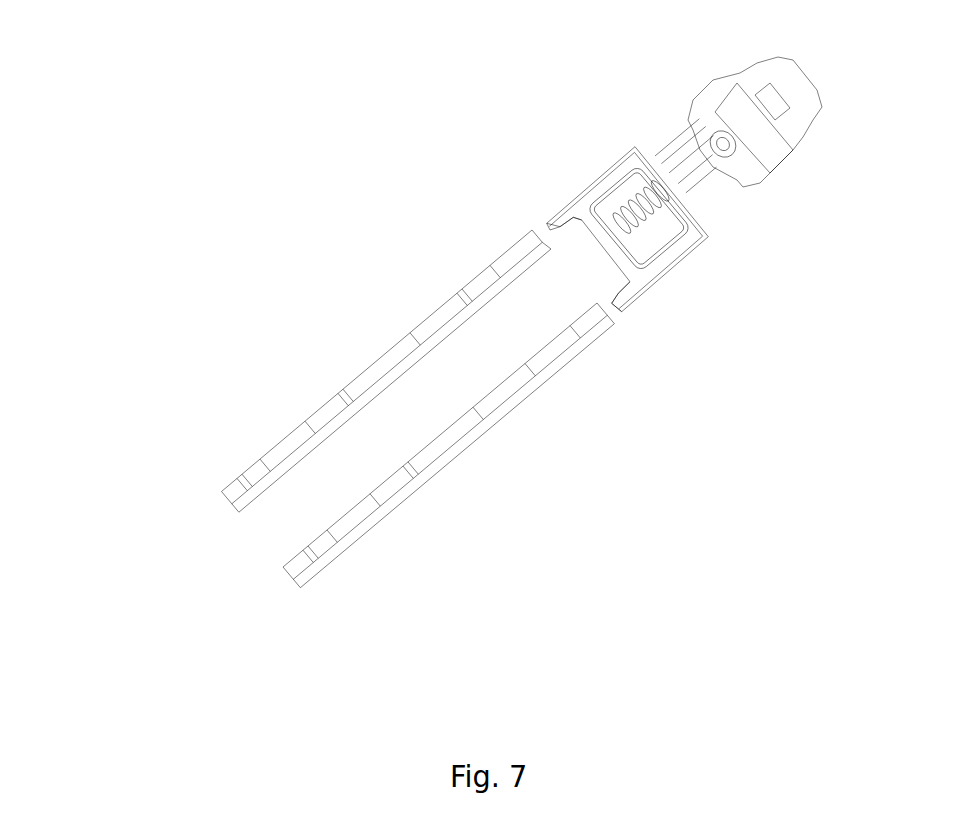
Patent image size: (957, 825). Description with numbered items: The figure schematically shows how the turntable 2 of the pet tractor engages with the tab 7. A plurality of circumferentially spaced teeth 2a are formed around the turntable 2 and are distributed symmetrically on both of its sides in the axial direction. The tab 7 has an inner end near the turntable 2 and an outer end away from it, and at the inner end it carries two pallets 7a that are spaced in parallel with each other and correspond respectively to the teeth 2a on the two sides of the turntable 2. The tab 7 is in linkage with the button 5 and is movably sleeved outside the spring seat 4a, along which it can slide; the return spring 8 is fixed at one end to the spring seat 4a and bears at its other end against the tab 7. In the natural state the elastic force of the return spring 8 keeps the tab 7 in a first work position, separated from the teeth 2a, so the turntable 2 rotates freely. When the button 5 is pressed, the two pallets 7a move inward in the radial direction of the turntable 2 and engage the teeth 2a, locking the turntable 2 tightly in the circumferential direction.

The turntable 2 is at (297, 457).
The teeth 2a is at (457, 293).
The tab 7 is at (672, 262).
The pallets 7a is at (543, 222).
The spring seat 4a is at (612, 235).
The return spring 8 is at (637, 207).
The button 5 is at (720, 180).